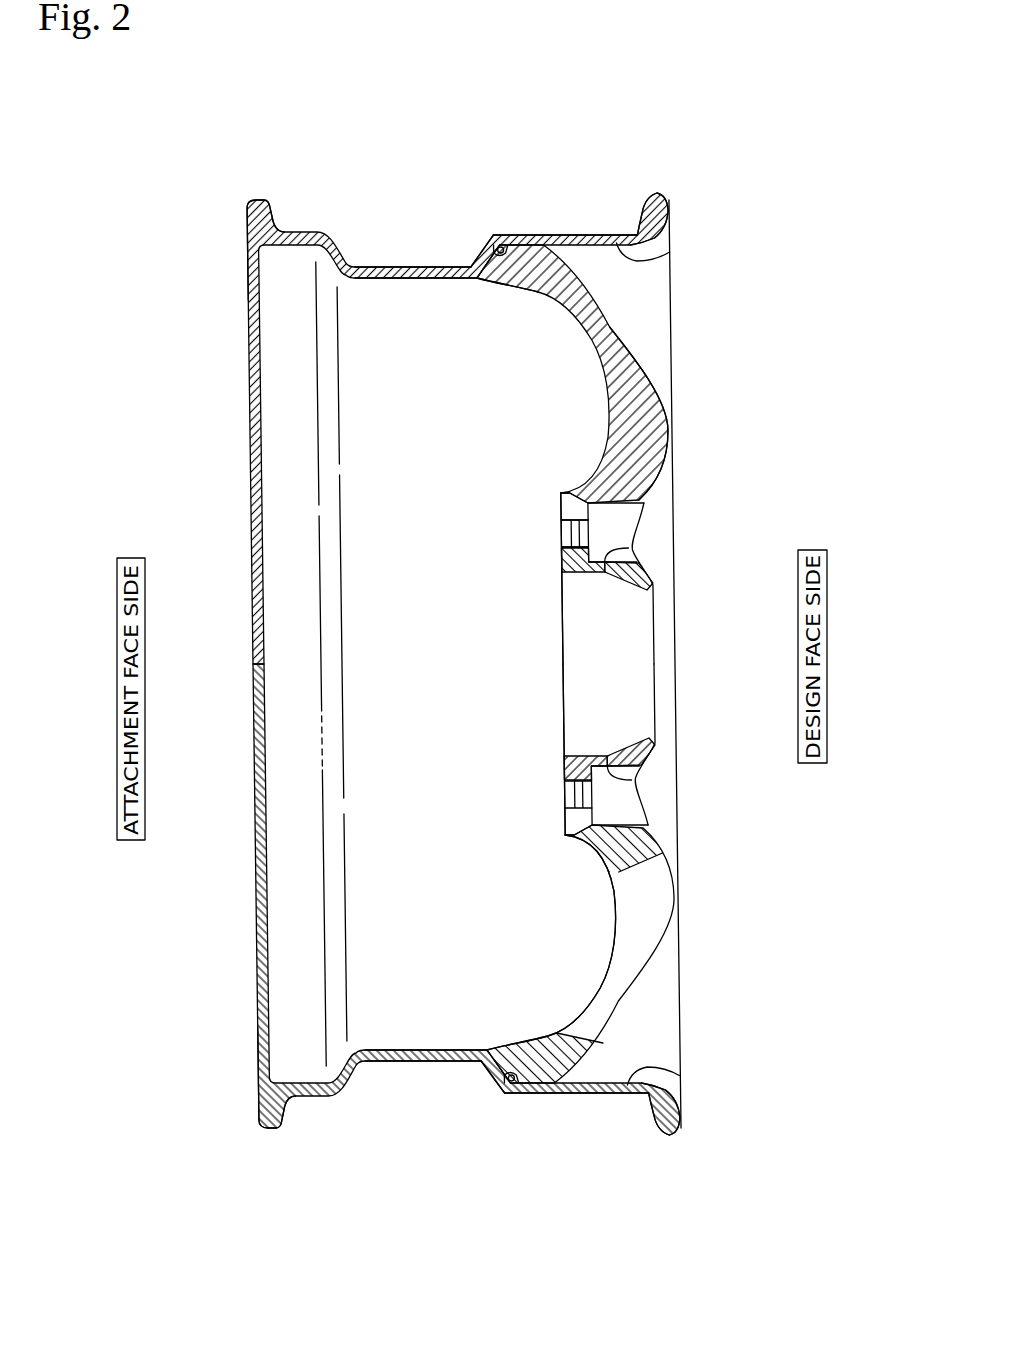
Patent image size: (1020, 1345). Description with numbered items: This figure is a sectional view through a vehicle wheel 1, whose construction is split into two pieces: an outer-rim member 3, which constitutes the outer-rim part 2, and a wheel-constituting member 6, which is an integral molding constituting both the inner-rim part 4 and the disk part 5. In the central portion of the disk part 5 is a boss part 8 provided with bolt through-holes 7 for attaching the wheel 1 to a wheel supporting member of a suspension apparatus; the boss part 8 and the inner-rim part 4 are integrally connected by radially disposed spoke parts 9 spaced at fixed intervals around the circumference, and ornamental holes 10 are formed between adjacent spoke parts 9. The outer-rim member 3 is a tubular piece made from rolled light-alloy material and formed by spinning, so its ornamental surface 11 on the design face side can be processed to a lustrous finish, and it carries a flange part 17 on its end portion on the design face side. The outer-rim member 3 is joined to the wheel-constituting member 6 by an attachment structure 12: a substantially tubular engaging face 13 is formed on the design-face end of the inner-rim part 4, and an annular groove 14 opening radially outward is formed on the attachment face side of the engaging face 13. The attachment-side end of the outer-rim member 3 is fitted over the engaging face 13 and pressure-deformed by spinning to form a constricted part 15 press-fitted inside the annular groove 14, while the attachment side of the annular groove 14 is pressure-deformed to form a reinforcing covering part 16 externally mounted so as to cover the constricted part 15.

The vehicle wheel 1 is at (690, 124).
The outer-rim part 2 is at (557, 233).
The outer-rim member 3 is at (598, 224).
The inner-rim part 4 is at (385, 265).
The disk part 5 is at (662, 372).
The wheel-constituting member 6 is at (312, 194).
The bolt through-holes 7 is at (622, 542).
The boss part 8 is at (560, 556).
The spoke parts 9 is at (666, 426).
The ornamental holes 10 is at (650, 924).
The ornamental surface 11 is at (660, 256).
The attachment structure 12 is at (470, 275).
The engaging face 13 is at (530, 233).
The annular groove 14 is at (512, 263).
The constricted part 15 is at (503, 246).
The reinforcing covering part 16 is at (496, 247).
The flange part 17 is at (669, 200).